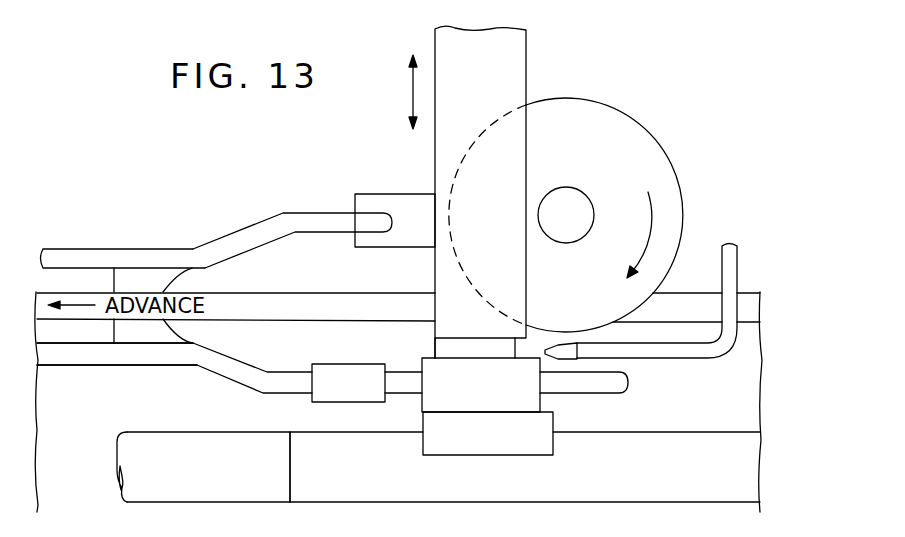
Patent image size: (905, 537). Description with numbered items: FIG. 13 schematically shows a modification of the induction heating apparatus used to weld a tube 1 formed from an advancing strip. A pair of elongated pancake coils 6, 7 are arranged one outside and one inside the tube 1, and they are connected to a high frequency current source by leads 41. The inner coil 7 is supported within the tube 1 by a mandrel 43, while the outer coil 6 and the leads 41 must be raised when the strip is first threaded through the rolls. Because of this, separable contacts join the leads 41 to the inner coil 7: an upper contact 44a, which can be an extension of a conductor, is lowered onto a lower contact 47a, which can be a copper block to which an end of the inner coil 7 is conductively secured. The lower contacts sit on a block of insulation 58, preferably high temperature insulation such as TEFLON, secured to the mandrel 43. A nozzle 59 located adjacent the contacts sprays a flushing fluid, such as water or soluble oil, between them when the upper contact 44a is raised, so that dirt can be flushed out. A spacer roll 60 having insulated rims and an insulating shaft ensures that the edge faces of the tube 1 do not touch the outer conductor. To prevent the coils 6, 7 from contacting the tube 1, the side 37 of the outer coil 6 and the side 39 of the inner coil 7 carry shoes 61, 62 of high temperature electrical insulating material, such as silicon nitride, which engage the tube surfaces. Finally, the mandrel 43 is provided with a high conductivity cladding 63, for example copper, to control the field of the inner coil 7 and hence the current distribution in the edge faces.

The tube 1 is at (684, 292).
The outer pancake coil 6 is at (108, 247).
The inner pancake coil 7 is at (119, 367).
The coil side 37 is at (238, 232).
The coil side 39 is at (222, 378).
The leads 41 is at (529, 77).
The mandrel 43 is at (430, 498).
The upper contact 44a is at (440, 350).
The lower contact 47a is at (425, 402).
The block of insulation 58 is at (553, 425).
The nozzle 59 is at (578, 346).
The spacer roll 60 is at (643, 140).
The shoe 61 is at (181, 291).
The shoe 62 is at (183, 334).
The high conductivity cladding 63 is at (270, 502).